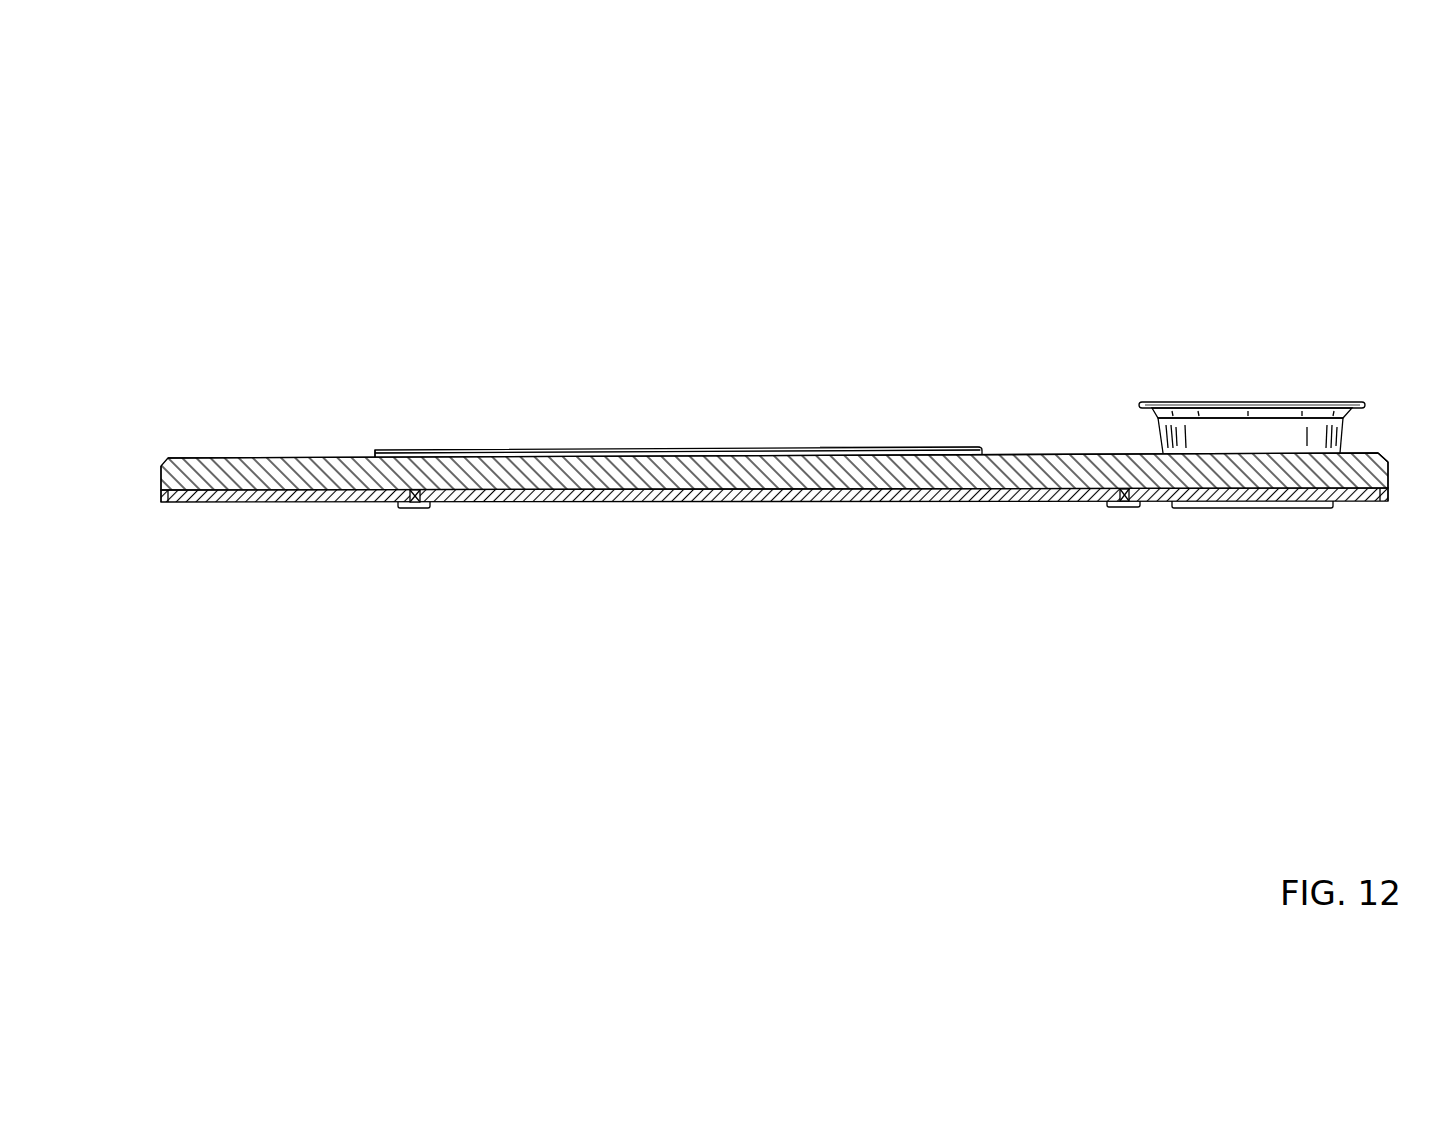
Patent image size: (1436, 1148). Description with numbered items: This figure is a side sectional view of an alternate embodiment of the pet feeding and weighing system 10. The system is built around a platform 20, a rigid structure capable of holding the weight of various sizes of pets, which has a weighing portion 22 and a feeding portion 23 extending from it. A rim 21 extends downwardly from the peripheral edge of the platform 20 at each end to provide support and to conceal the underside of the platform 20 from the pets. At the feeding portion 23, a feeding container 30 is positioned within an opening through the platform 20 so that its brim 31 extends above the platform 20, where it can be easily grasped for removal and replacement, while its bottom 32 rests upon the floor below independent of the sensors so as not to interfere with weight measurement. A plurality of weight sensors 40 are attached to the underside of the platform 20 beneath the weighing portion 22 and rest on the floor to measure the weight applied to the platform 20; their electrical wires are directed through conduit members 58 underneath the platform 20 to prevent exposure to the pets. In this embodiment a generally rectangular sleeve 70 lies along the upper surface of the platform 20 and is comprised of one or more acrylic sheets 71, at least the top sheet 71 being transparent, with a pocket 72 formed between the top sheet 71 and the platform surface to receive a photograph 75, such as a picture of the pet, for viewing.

The pet feeding and weighing system 10 is at (350, 205).
The platform 20 is at (306, 448).
The rim 21 is at (158, 503).
The weighing portion 22 is at (1005, 453).
The feeding portion 23 is at (1370, 453).
The feeding container 30 is at (1145, 431).
The brim 31 is at (1158, 402).
The bottom 32 is at (1275, 510).
The weight sensor 40 is at (395, 521).
The conduit member 58 is at (428, 496).
The sleeve 70 is at (702, 436).
The acrylic sheet 71 is at (600, 452).
The pocket 72 is at (375, 453).
The photograph 75 is at (833, 452).